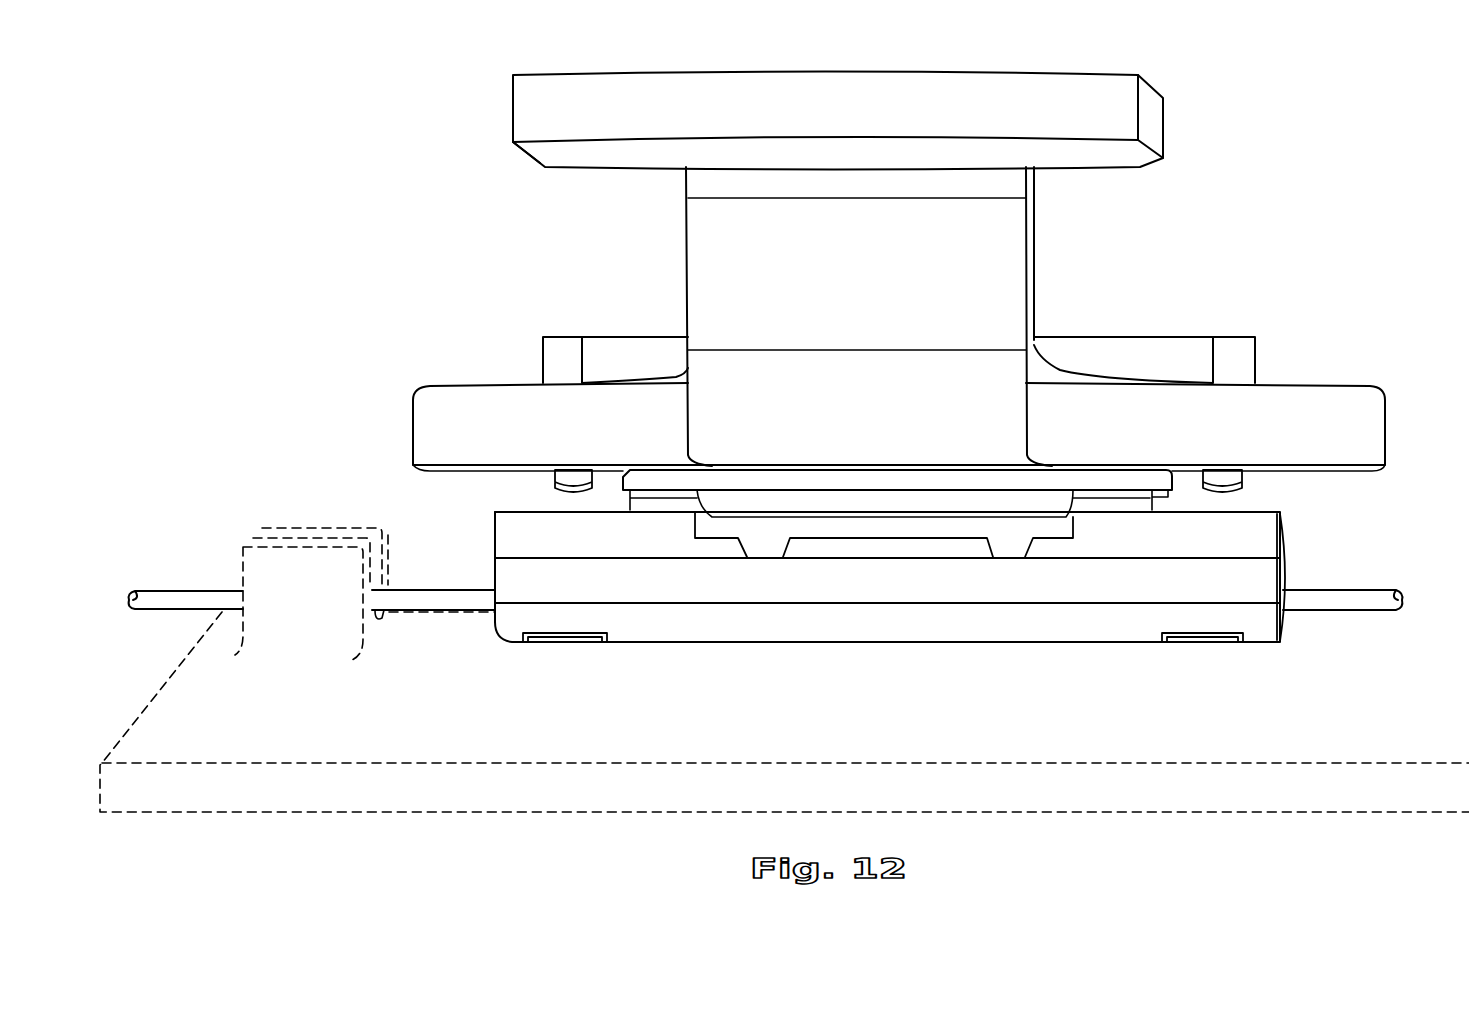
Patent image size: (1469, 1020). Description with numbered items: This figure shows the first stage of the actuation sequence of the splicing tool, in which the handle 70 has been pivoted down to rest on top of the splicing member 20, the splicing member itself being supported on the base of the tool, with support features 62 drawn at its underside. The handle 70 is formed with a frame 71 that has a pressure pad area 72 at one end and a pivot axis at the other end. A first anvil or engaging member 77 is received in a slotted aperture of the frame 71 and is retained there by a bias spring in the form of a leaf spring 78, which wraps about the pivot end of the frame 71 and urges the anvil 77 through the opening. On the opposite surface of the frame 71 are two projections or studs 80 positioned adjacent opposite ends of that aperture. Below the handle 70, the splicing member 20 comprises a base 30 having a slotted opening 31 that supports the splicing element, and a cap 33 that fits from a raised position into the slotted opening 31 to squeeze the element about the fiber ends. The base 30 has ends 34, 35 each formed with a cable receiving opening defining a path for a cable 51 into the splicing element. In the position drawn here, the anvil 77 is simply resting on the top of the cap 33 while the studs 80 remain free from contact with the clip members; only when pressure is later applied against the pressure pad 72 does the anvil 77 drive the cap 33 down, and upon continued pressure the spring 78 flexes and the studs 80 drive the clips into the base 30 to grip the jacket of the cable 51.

The splicing member 20 is at (1040, 648).
The base 30 is at (879, 623).
The slotted opening 31 is at (699, 525).
The cap 33 is at (1120, 495).
The end of base 34 is at (493, 532).
The end of base 35 is at (1286, 520).
The cable 51 is at (199, 583).
The mounting foot 62 is at (576, 644).
The handle 70 is at (1285, 235).
The frame 71 is at (1036, 262).
The pressure pad area 72 is at (847, 115).
The anvil 77 is at (862, 482).
The leaf spring 78 is at (628, 335).
The studs 80 is at (553, 481).